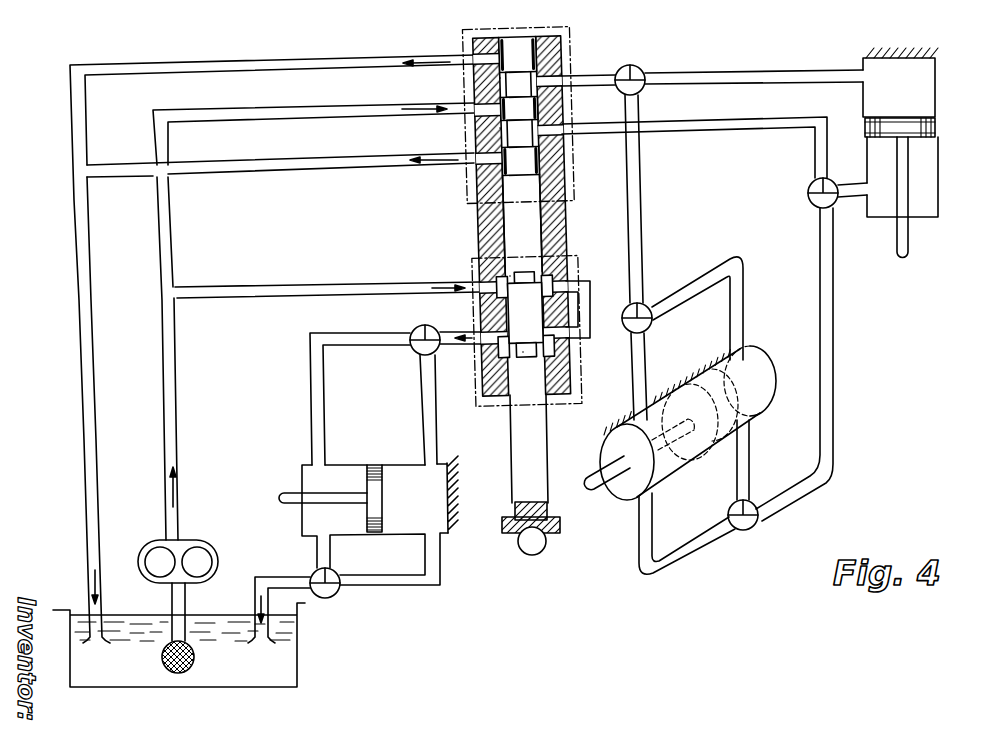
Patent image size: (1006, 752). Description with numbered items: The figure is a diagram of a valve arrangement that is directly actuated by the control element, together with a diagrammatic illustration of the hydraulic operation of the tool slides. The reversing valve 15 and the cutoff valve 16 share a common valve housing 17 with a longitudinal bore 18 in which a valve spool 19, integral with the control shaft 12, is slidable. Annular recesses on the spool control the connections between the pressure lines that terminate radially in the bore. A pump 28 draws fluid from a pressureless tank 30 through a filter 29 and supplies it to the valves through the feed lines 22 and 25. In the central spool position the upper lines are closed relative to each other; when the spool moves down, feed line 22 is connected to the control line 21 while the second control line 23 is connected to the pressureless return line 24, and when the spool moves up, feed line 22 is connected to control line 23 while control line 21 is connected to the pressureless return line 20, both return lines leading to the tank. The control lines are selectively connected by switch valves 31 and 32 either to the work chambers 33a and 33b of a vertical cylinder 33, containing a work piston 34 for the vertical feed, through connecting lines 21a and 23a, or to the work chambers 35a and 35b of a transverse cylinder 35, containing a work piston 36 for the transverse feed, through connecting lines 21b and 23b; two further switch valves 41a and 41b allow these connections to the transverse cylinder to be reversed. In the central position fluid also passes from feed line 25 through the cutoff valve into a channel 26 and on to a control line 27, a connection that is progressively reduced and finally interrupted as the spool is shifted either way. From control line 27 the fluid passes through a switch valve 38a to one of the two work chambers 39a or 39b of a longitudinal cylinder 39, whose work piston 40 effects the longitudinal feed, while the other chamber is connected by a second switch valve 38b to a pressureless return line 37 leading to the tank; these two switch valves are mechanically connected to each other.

The control shaft 12 is at (538, 460).
The reversing valve 15 is at (571, 180).
The cutoff valve 16 is at (492, 408).
The valve housing 17 is at (490, 219).
The longitudinal bore 18 is at (542, 233).
The valve spool 19 is at (515, 245).
The pressureless return line 20 is at (290, 64).
The control line 21 is at (595, 74).
The connecting line 21a is at (788, 72).
The connecting line 21b is at (636, 217).
The feed line 22 is at (308, 113).
The control line 23 is at (602, 123).
The connecting line 23a is at (852, 199).
The connecting line 23b is at (836, 332).
The pressureless return line 24 is at (333, 164).
The feed line 25 is at (337, 289).
The channel 26 is at (586, 297).
The control line 27 is at (450, 330).
The pump 28 is at (198, 544).
The filter 29 is at (196, 658).
The pressureless tank 30 is at (128, 671).
The switch valve 31 is at (635, 64).
The switch valve 32 is at (806, 189).
The vertical cylinder 33 is at (937, 85).
The work chamber 33a is at (910, 67).
The work chamber 33b is at (928, 203).
The work piston 34 is at (937, 127).
The transverse cylinder 35 is at (778, 385).
The work chamber 35a is at (664, 473).
The work chamber 35b is at (758, 361).
The work piston 36 is at (695, 444).
The pressureless return line 37 is at (254, 587).
The switch valve 38a is at (414, 332).
The switch valve 38b is at (331, 595).
The longitudinal cylinder 39 is at (301, 470).
The work chamber 39a is at (318, 517).
The work chamber 39b is at (438, 507).
The work piston 40 is at (373, 464).
The switch valve 41a is at (643, 309).
The switch valve 41b is at (750, 526).